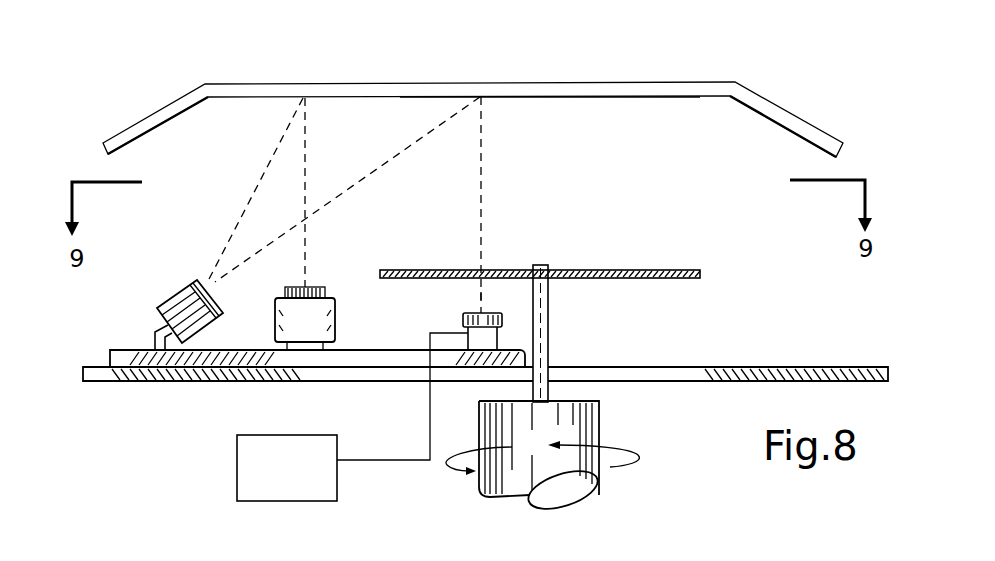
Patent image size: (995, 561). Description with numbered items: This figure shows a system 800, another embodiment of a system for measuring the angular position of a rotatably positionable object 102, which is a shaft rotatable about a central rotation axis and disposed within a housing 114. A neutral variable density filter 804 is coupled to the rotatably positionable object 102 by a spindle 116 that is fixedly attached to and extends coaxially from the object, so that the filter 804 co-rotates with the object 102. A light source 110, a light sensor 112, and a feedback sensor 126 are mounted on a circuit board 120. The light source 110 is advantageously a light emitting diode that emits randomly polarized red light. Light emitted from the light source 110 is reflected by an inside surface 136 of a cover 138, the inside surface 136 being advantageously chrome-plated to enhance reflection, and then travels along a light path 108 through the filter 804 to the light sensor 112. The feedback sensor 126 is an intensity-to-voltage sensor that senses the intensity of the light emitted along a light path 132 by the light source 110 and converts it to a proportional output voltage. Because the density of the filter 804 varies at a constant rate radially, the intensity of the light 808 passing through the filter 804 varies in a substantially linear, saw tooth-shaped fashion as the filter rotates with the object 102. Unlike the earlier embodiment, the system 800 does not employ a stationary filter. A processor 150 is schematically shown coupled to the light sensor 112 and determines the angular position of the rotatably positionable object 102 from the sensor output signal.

The system 800 is at (220, 64).
The cover 138 is at (620, 90).
The inside surface 136 is at (604, 97).
The light path 132 is at (290, 127).
The light path 108 is at (482, 180).
The light source 110 is at (173, 296).
The feedback sensor 126 is at (292, 332).
The circuit board 120 is at (122, 350).
The housing 114 is at (800, 368).
The neutral variable density filter 804 is at (657, 270).
The light 808 is at (481, 296).
The light sensor 112 is at (462, 318).
The spindle 116 is at (548, 318).
The rotatably positionable object 102 is at (600, 423).
The processor 150 is at (272, 476).